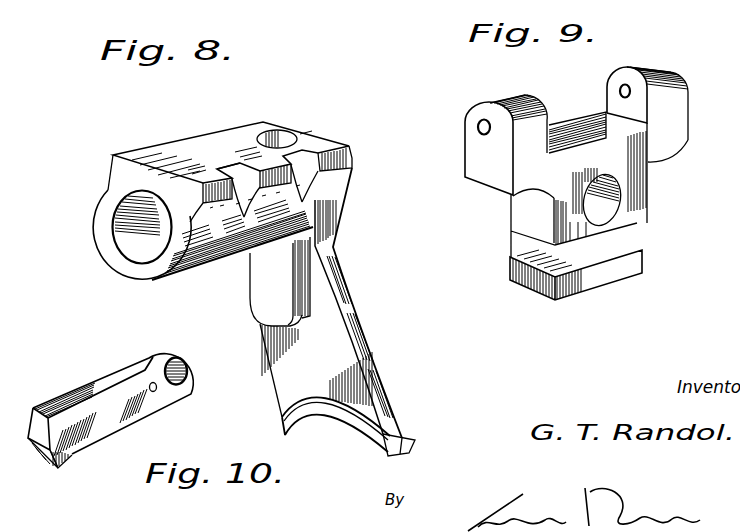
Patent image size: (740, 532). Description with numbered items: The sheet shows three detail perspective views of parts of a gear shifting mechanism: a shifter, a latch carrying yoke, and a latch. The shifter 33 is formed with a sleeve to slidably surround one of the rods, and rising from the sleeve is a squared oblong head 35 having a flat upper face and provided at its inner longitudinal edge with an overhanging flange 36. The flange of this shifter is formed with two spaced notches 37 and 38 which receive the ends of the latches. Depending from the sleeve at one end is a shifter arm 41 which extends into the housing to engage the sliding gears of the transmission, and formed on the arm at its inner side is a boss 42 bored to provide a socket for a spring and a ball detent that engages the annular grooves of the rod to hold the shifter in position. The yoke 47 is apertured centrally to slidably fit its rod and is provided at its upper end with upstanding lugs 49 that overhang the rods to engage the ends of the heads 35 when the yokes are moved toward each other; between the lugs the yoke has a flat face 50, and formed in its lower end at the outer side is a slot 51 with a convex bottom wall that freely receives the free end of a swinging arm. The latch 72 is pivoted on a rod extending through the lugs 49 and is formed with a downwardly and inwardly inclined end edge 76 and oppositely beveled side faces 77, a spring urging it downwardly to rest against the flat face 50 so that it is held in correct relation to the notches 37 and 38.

In FIG. 8, the shifter 33 is at (107, 196).
In FIG. 8, the squared oblong head 35 is at (115, 155).
In FIG. 8, the overhanging flange 36 is at (351, 149).
In FIG. 8, the notch 37 is at (224, 167).
In FIG. 8, the notch 38 is at (305, 149).
In FIG. 8, the shifter arm 41 is at (383, 377).
In FIG. 8, the boss 42 is at (268, 288).
In FIG. 9, the yoke 47 is at (641, 166).
In FIG. 9, the upstanding lug 49 is at (650, 70).
In FIG. 9, the flat face 50 is at (574, 126).
In FIG. 9, the slot 51 is at (622, 251).
In FIG. 10, the latch 72 is at (98, 384).
In FIG. 10, the inclined end edge 76 is at (43, 468).
In FIG. 10, the beveled side face 77 is at (59, 470).